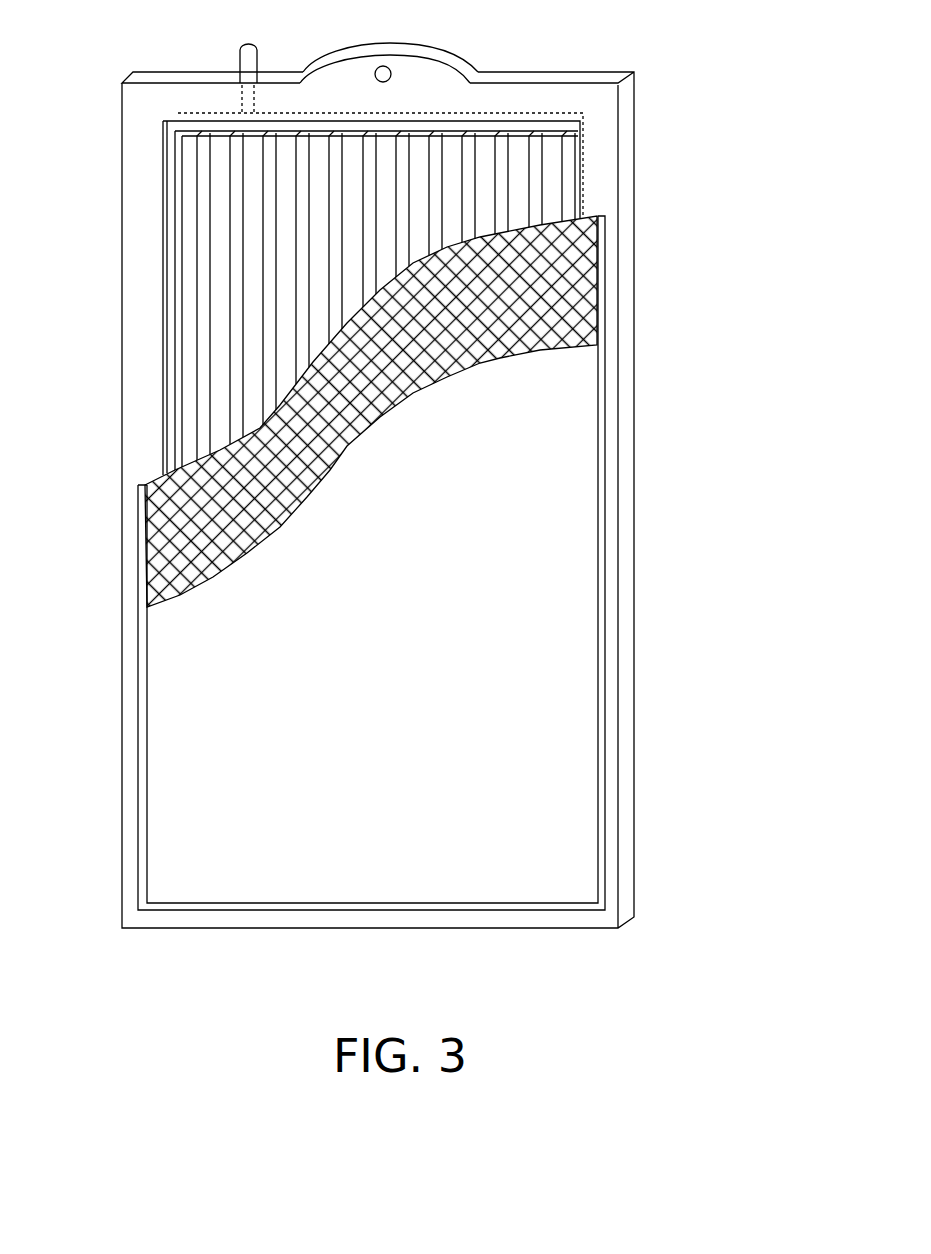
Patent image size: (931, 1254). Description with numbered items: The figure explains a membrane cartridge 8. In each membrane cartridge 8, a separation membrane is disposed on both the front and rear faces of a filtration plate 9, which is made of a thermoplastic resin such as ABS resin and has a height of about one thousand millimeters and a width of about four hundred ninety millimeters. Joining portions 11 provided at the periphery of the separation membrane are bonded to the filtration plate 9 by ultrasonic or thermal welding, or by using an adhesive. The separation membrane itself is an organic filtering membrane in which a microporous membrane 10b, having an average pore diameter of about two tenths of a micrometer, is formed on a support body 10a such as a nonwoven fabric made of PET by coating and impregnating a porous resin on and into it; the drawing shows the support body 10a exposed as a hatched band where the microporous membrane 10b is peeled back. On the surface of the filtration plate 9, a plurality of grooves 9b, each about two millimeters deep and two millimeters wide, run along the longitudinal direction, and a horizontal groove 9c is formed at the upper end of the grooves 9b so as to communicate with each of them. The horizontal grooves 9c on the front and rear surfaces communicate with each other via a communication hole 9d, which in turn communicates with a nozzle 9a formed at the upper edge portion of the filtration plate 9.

The membrane cartridge 8 is at (440, 500).
The filtration plate 9 is at (608, 192).
The nozzle 9a is at (258, 62).
The grooves 9b is at (200, 158).
The horizontal groove 9c is at (165, 122).
The communication hole 9d is at (245, 106).
The support body 10a is at (603, 308).
The microporous membrane 10b is at (583, 430).
The joining portions 11 is at (600, 650).